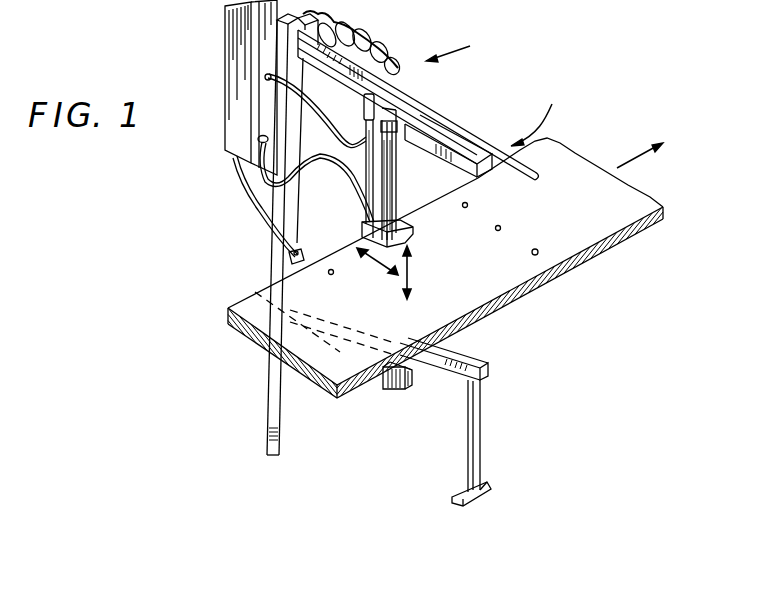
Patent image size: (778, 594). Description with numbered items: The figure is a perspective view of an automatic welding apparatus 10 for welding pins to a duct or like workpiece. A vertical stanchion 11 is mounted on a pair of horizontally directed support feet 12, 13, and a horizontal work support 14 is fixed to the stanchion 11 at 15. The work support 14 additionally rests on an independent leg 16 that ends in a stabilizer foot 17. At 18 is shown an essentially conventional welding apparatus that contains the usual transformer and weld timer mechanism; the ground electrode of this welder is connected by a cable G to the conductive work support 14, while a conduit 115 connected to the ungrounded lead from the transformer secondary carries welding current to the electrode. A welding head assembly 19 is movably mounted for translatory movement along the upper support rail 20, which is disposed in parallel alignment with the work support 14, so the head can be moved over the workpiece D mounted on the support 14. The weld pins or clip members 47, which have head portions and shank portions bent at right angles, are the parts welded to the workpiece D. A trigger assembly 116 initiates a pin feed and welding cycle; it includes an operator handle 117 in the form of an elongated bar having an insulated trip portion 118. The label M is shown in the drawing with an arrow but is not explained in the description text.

The automatic welding apparatus 10 is at (454, 49).
The vertical stanchion 11 is at (277, 270).
The support foot 12 is at (401, 386).
The support foot 13 is at (269, 431).
The horizontal work support 14 is at (469, 358).
The fixing point 15 is at (299, 254).
The independent leg 16 is at (483, 438).
The stabilizer foot 17 is at (467, 507).
The welding apparatus 18 is at (225, 145).
The welding head assembly 19 is at (402, 181).
The upper support rail 20 is at (408, 106).
The weld pin 47 is at (536, 264).
The conduit 115 is at (350, 199).
The trigger assembly 116 is at (537, 113).
The operator handle 117 is at (470, 128).
The insulated trip portion 118 is at (548, 160).
The cable G is at (257, 211).
The material M is at (660, 201).
The workpiece D is at (572, 255).